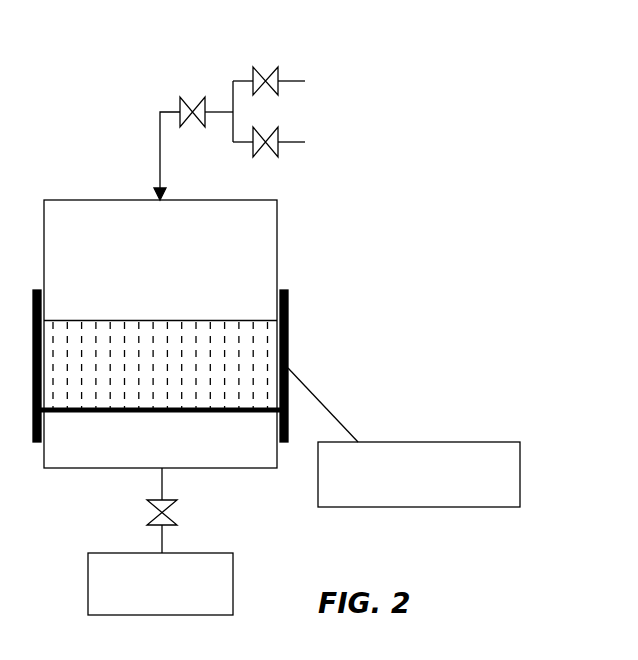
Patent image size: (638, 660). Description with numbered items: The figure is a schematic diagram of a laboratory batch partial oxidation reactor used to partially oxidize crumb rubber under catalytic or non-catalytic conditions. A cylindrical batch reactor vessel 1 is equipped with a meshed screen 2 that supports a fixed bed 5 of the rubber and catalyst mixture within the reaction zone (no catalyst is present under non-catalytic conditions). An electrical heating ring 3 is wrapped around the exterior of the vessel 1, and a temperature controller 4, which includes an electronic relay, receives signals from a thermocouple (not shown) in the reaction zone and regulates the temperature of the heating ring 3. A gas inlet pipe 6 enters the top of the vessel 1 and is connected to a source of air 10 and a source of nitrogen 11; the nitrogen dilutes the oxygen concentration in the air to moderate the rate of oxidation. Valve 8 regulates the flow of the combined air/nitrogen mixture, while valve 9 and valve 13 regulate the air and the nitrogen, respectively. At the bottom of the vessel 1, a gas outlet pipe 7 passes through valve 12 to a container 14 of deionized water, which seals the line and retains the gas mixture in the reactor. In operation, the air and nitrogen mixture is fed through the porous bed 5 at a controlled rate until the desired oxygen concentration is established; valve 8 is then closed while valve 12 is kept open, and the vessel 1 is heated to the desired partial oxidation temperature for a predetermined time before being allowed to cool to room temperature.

The cylindrical batch reactor vessel 1 is at (72, 468).
The meshed screen 2 is at (138, 413).
The electrical heating ring 3 is at (288, 310).
The temperature controller 4 is at (412, 442).
The fixed bed 5 is at (148, 320).
The gas inlet pipe 6 is at (158, 138).
The gas outlet pipe 7 is at (160, 480).
The valve 8 is at (183, 123).
The valve 9 is at (254, 65).
The source of air 10 is at (295, 77).
The source of nitrogen 11 is at (295, 142).
The valve 12 is at (172, 507).
The valve 13 is at (258, 150).
The container of deionized water 14 is at (160, 584).